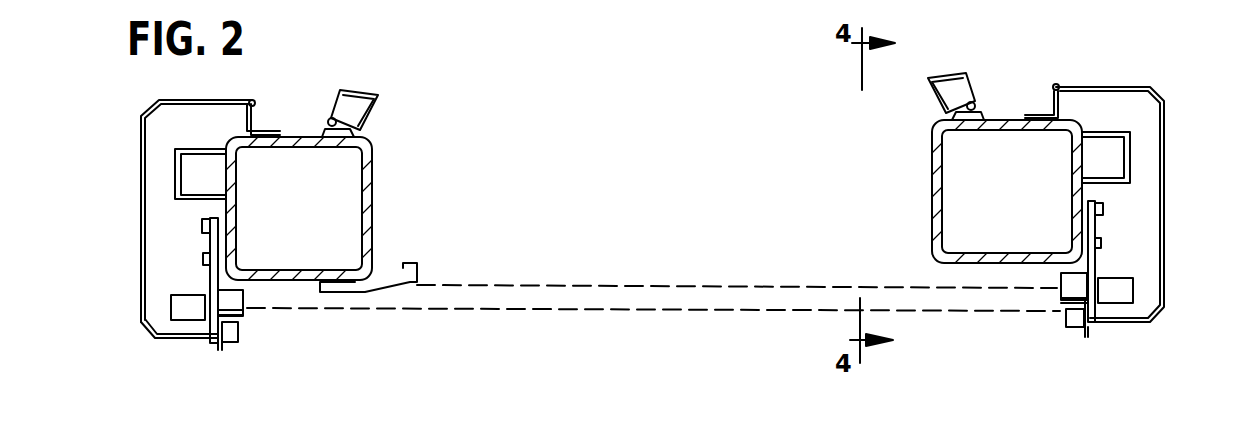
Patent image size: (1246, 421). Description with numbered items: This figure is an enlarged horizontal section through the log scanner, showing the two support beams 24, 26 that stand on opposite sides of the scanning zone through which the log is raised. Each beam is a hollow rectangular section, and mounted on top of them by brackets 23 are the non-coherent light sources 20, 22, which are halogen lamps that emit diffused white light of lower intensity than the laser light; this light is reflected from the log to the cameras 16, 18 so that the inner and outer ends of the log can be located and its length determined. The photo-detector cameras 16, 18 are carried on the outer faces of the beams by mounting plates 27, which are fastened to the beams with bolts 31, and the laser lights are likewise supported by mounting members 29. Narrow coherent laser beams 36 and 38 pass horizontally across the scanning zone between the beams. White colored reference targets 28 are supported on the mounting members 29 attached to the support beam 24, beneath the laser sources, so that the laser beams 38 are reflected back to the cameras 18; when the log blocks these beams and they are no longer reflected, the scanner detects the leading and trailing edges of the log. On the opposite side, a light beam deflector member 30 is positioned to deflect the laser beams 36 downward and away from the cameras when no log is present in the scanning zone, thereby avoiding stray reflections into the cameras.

The photo-detector cameras 16 is at (1120, 298).
The cameras 18 is at (184, 312).
The non-coherent light sources 20 is at (935, 97).
The non-coherent light sources 22 is at (366, 118).
The brackets 23 is at (328, 126).
The support beam 24 is at (930, 183).
The support beam 26 is at (374, 197).
The mounting plates 27 is at (208, 268).
The reference targets 28 is at (1064, 322).
The mounting members 29 is at (222, 345).
The light beam deflector member 30 is at (388, 278).
The bolts 31 is at (203, 227).
The laser light beams 36 is at (583, 286).
The laser light beams 38 is at (583, 313).